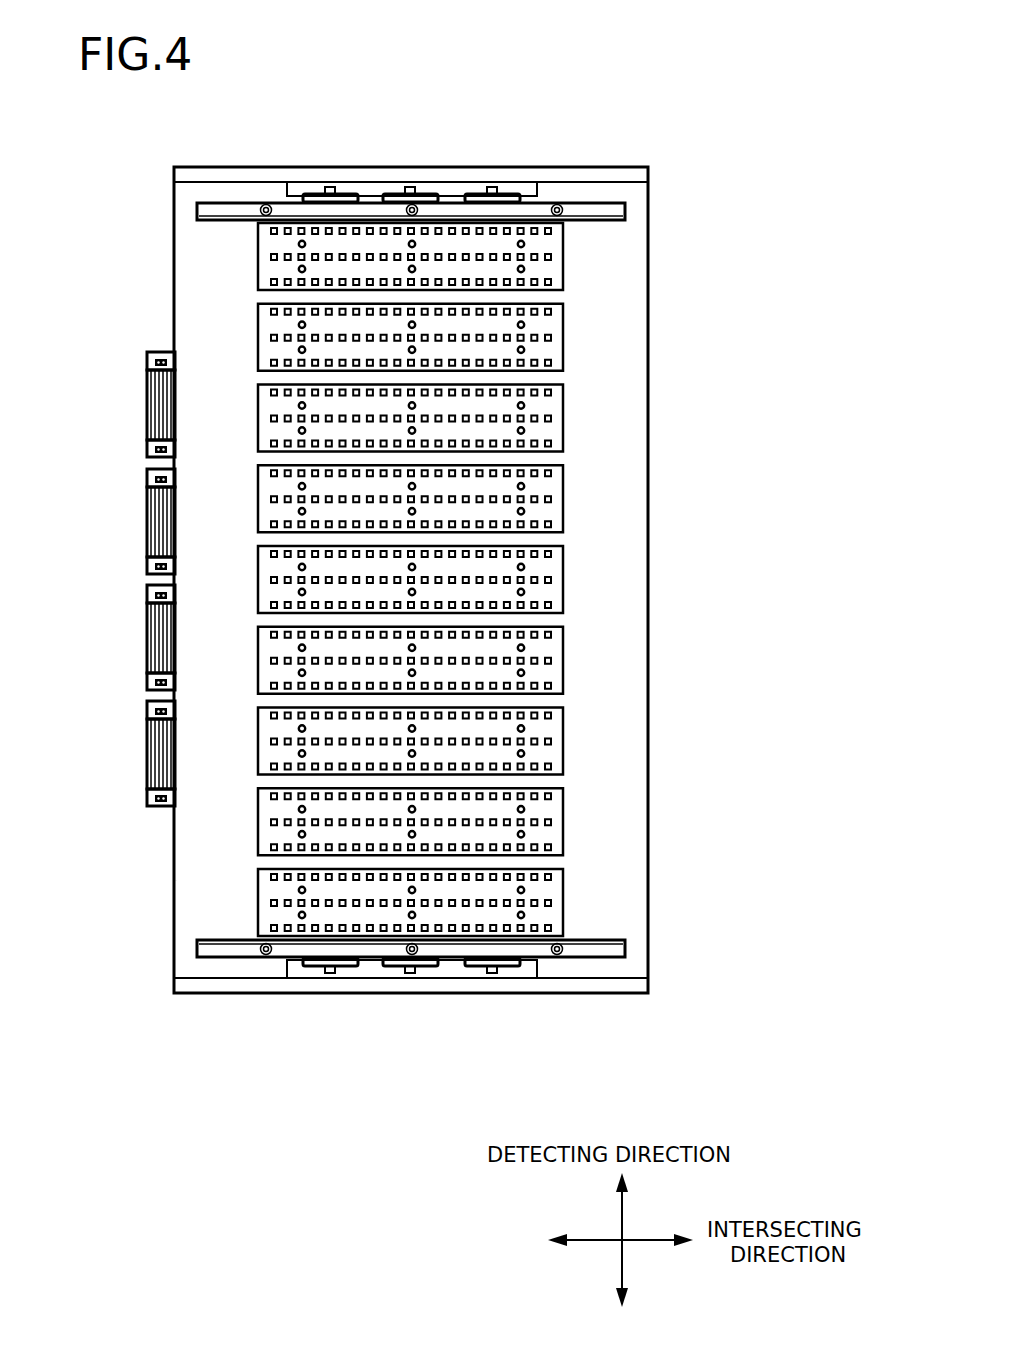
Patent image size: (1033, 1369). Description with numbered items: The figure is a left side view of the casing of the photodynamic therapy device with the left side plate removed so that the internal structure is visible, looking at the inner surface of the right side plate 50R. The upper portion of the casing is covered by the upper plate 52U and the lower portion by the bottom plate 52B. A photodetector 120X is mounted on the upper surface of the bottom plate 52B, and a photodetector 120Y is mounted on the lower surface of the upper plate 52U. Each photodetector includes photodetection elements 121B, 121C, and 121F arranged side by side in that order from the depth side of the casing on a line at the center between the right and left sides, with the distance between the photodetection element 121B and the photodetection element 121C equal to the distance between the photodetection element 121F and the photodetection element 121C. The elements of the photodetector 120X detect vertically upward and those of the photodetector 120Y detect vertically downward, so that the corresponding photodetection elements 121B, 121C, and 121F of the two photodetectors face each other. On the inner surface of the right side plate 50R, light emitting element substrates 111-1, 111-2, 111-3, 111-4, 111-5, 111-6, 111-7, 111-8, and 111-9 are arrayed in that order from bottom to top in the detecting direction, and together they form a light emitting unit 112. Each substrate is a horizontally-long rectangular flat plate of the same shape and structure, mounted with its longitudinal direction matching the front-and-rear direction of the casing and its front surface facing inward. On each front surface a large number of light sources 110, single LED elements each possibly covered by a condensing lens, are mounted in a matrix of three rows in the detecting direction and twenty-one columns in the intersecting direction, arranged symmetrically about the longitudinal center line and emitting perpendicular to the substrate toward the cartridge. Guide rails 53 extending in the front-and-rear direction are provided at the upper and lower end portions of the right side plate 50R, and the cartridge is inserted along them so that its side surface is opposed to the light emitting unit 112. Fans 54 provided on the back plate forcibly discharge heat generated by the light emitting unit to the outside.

The right side plate 50R is at (612, 529).
The upper plate 52U is at (634, 167).
The bottom plate 52B is at (638, 994).
The guide rails 53 is at (625, 205).
The fans 54 is at (147, 417).
The light sources 110 is at (519, 579).
The light emitting element substrate 111-1 is at (565, 890).
The light emitting element substrate 111-2 is at (565, 808).
The light emitting element substrate 111-3 is at (565, 728).
The light emitting element substrate 111-4 is at (565, 670).
The light emitting element substrate 111-5 is at (565, 563).
The light emitting element substrate 111-6 is at (565, 486).
The light emitting element substrate 111-7 is at (565, 405).
The light emitting element substrate 111-8 is at (565, 324).
The light emitting element substrate 111-9 is at (565, 243).
The light emitting unit 112 is at (201, 878).
The photodetector 120Y is at (552, 92).
The photodetector 120X is at (573, 1050).
The photodetection element 121B is at (330, 185).
The photodetection element 121C is at (412, 185).
The photodetection element 121F is at (490, 185).